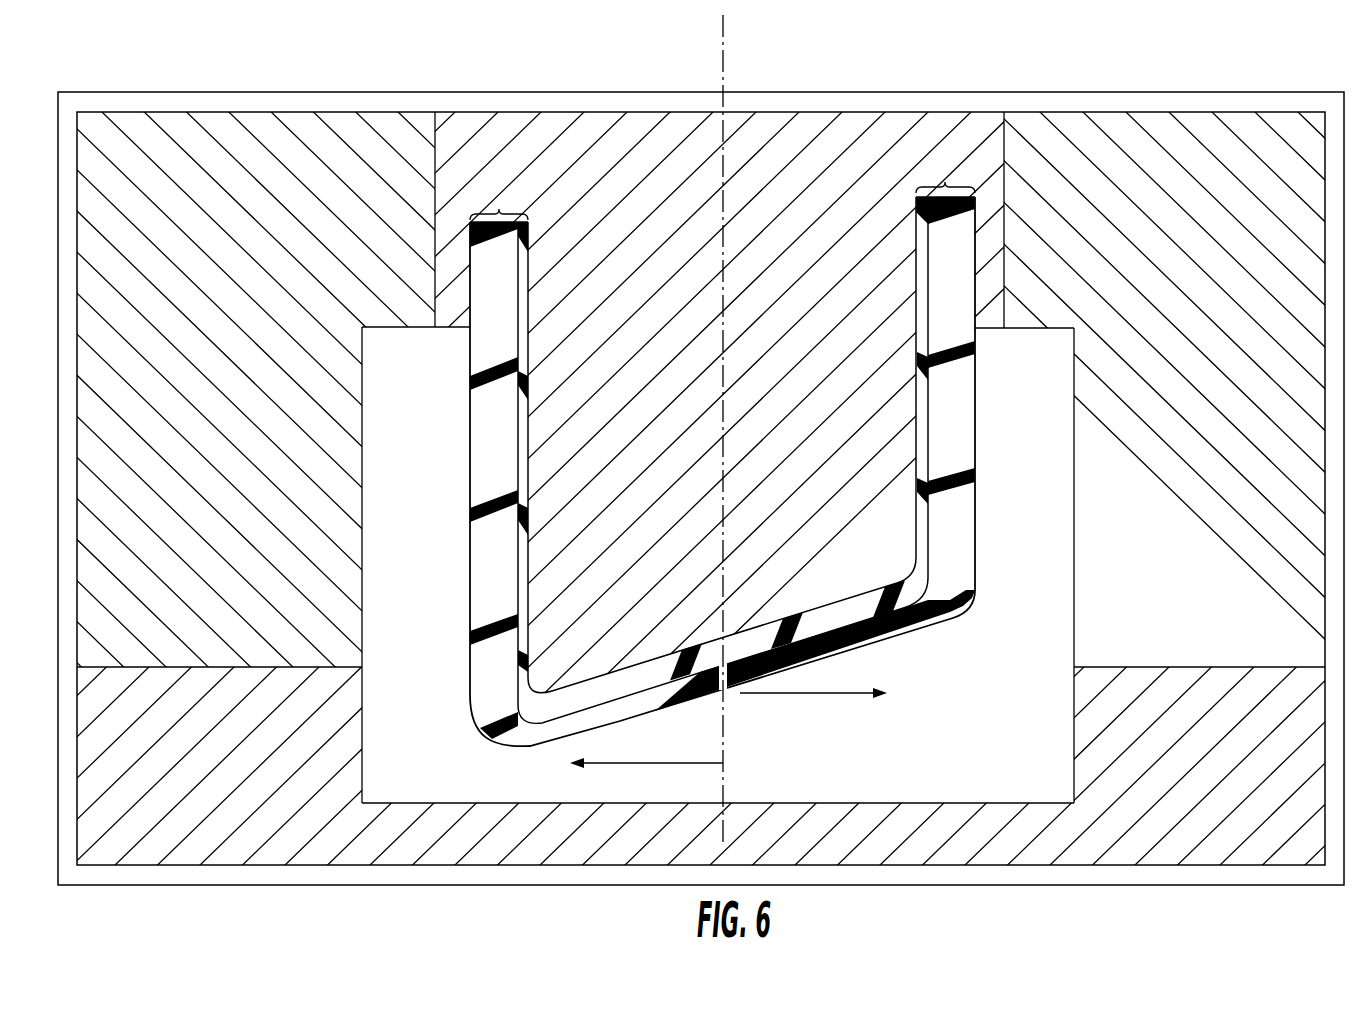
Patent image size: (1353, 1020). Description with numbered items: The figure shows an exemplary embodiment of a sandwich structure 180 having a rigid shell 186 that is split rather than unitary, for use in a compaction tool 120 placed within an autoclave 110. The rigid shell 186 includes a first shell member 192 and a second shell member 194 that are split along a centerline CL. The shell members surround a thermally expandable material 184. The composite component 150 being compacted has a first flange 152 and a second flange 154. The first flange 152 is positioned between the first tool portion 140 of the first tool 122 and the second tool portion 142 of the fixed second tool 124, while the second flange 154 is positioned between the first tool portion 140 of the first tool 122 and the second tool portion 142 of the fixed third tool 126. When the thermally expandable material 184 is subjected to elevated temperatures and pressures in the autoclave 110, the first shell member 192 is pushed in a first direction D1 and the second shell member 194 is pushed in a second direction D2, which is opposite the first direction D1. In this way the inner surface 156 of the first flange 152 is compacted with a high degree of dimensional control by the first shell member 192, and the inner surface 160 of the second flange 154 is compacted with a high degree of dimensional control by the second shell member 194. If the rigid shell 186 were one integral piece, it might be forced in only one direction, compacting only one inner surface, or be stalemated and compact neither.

The autoclave 110 is at (268, 92).
The compaction tool 120 is at (433, 231).
The first tool 122 is at (687, 387).
The fixed second tool 124 is at (290, 410).
The fixed third tool 126 is at (1163, 410).
The first tool portion 140 is at (550, 490).
The second tool portion 142 is at (345, 608).
The composite component 150 is at (560, 811).
The first flange 152 is at (433, 407).
The second flange 154 is at (1045, 497).
The inner surface 156 is at (486, 350).
The inner surface 160 is at (962, 530).
The sandwich structure 180 is at (722, 201).
The thermally expandable material 184 is at (525, 542).
The rigid shell 186 is at (500, 760).
The first shell member 192 is at (493, 547).
The second shell member 194 is at (953, 437).
The first direction D1 is at (646, 779).
The second direction D2 is at (813, 711).
The centerline CL is at (723, 92).